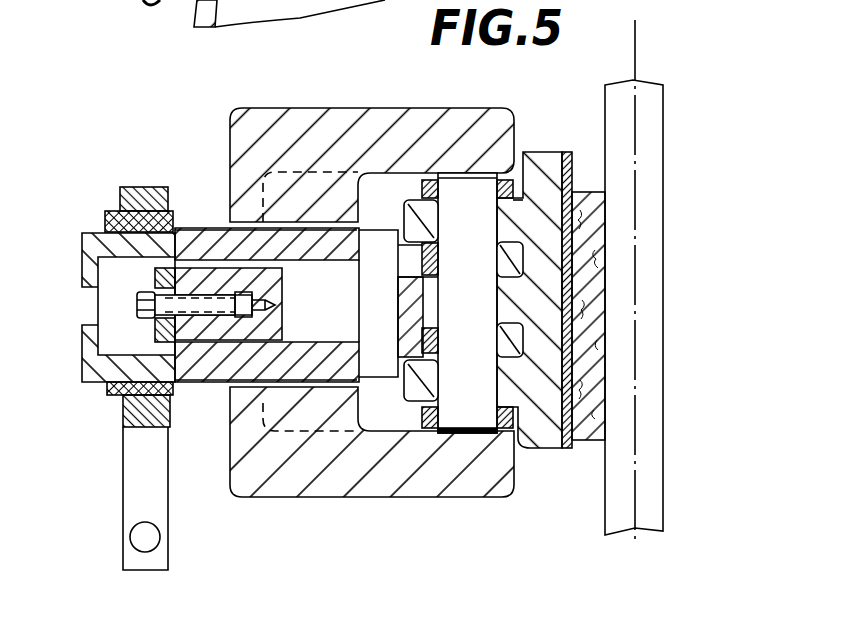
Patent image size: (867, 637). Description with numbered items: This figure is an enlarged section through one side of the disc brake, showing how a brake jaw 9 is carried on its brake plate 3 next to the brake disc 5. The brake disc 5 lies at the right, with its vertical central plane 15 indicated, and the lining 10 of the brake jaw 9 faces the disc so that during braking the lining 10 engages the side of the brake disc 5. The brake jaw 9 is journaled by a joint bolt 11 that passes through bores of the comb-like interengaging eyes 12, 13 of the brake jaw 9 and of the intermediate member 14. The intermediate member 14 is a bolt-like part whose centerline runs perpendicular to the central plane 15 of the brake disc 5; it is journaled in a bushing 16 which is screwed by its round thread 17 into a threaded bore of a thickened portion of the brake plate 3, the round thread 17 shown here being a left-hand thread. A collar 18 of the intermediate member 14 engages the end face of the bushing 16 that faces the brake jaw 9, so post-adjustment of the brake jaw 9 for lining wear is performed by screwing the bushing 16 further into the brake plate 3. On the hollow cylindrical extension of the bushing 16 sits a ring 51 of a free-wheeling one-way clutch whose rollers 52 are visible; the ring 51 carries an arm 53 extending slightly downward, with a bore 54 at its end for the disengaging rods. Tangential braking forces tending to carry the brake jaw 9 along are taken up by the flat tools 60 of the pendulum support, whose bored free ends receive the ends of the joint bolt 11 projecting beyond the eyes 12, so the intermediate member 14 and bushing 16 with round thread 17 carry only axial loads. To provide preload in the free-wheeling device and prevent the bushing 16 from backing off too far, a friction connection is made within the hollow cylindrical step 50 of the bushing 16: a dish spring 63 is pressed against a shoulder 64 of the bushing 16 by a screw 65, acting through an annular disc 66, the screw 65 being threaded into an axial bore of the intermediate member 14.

The brake plate 3 is at (340, 487).
The brake disc 5 is at (657, 412).
The brake jaw 9 is at (550, 448).
The lining 10 is at (596, 446).
The joint bolt 11 is at (457, 434).
The eye 12 is at (417, 290).
The eye 13 is at (510, 191).
The intermediate member 14 is at (335, 331).
The vertical central plane 15 is at (637, 58).
The bushing 16 is at (203, 227).
The round thread 17 is at (247, 227).
The collar 18 is at (396, 359).
The hollow cylindrical step 50 is at (92, 372).
The ring 51 is at (132, 186).
The roller 52 is at (125, 400).
The arm 53 is at (132, 500).
The bore 54 is at (152, 542).
The flat tool 60 is at (513, 196).
The dish spring 63 is at (205, 345).
The shoulder 64 is at (174, 258).
The screw 65 is at (137, 313).
The annular disc 66 is at (155, 335).